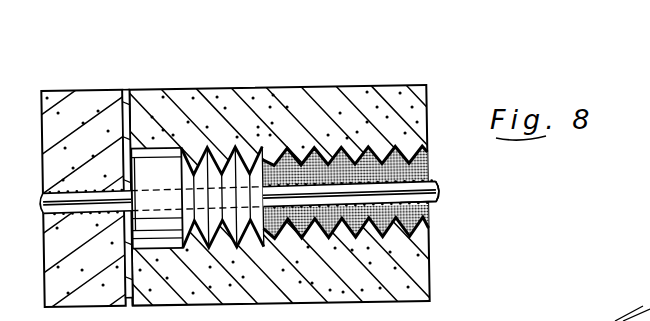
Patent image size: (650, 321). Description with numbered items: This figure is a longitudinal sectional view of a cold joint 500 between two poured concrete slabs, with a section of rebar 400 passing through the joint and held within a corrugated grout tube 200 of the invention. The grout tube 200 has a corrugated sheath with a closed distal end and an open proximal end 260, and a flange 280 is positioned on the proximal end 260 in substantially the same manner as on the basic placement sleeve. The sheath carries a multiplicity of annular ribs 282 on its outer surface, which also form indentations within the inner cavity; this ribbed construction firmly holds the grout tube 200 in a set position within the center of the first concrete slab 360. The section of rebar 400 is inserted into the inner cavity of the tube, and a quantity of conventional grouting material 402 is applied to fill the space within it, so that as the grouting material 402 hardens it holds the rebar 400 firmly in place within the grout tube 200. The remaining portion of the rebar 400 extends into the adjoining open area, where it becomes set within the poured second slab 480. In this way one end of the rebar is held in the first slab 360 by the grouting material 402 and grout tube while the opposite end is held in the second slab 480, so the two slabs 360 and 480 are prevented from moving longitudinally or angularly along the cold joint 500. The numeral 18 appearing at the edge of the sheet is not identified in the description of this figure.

The second slab 480 is at (73, 100).
The cold joint 500 is at (124, 100).
The flange 280 is at (133, 122).
The concrete slab 360 is at (298, 92).
The grout tube 200 is at (272, 146).
The rebar 400 is at (72, 212).
The grouting material 402 is at (430, 211).
The annular ribs 282 is at (334, 238).
The open proximal end 260 is at (162, 246).
The adjacent figure fragment 18 is at (584, 320).